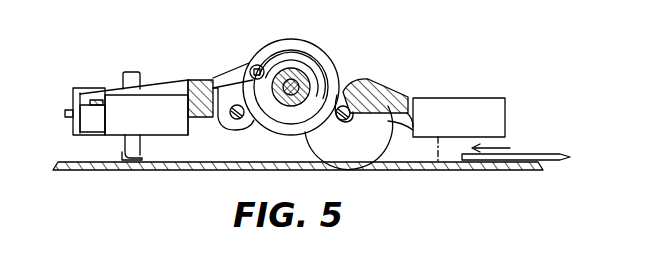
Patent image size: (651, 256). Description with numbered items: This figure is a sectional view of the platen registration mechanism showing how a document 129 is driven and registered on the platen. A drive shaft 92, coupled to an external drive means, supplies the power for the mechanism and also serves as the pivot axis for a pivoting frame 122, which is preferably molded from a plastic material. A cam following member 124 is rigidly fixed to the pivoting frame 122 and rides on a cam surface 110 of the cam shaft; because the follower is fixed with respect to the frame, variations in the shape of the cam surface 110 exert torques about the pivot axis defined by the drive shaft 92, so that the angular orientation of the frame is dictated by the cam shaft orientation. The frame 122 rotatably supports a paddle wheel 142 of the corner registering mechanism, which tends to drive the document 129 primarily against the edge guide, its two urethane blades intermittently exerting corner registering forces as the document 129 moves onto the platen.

The paddle wheel 142 is at (122, 74).
The pivoting frame 122 is at (189, 80).
The cam following member 124 is at (233, 74).
The cam surface 110 is at (318, 39).
The drive shaft 92 is at (224, 120).
The document 129 is at (523, 154).